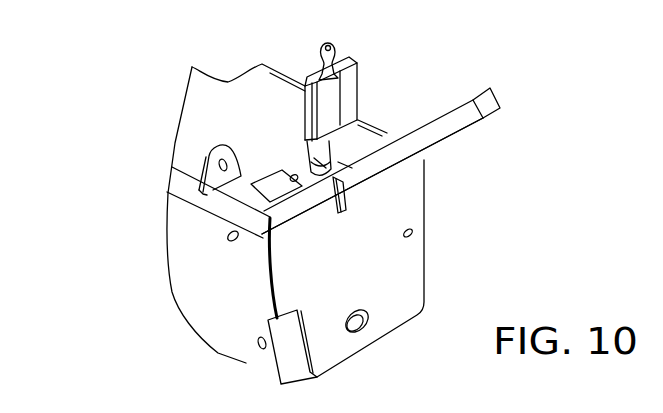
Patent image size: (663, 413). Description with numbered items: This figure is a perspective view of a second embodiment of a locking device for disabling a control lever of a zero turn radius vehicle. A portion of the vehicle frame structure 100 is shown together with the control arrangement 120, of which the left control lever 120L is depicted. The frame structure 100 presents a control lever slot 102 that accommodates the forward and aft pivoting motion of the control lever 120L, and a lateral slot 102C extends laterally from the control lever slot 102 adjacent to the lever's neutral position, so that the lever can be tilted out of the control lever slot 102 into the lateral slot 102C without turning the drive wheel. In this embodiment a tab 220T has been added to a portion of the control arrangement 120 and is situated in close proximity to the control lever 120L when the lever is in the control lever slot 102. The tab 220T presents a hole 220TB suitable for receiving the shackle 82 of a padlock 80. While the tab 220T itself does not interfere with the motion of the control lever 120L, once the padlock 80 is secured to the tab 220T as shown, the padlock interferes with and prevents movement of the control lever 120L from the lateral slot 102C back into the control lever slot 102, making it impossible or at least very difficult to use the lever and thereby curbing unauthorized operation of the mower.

The vehicle frame structure 100 is at (135, 261).
The control lever slot 102 is at (272, 185).
The lateral slot 102C is at (353, 202).
The padlock 80 is at (306, 85).
The shackle 82 is at (307, 157).
The hole 220TB is at (322, 157).
The tab 220T is at (348, 158).
The control arrangement 120 is at (528, 103).
The left control lever 120L is at (440, 139).